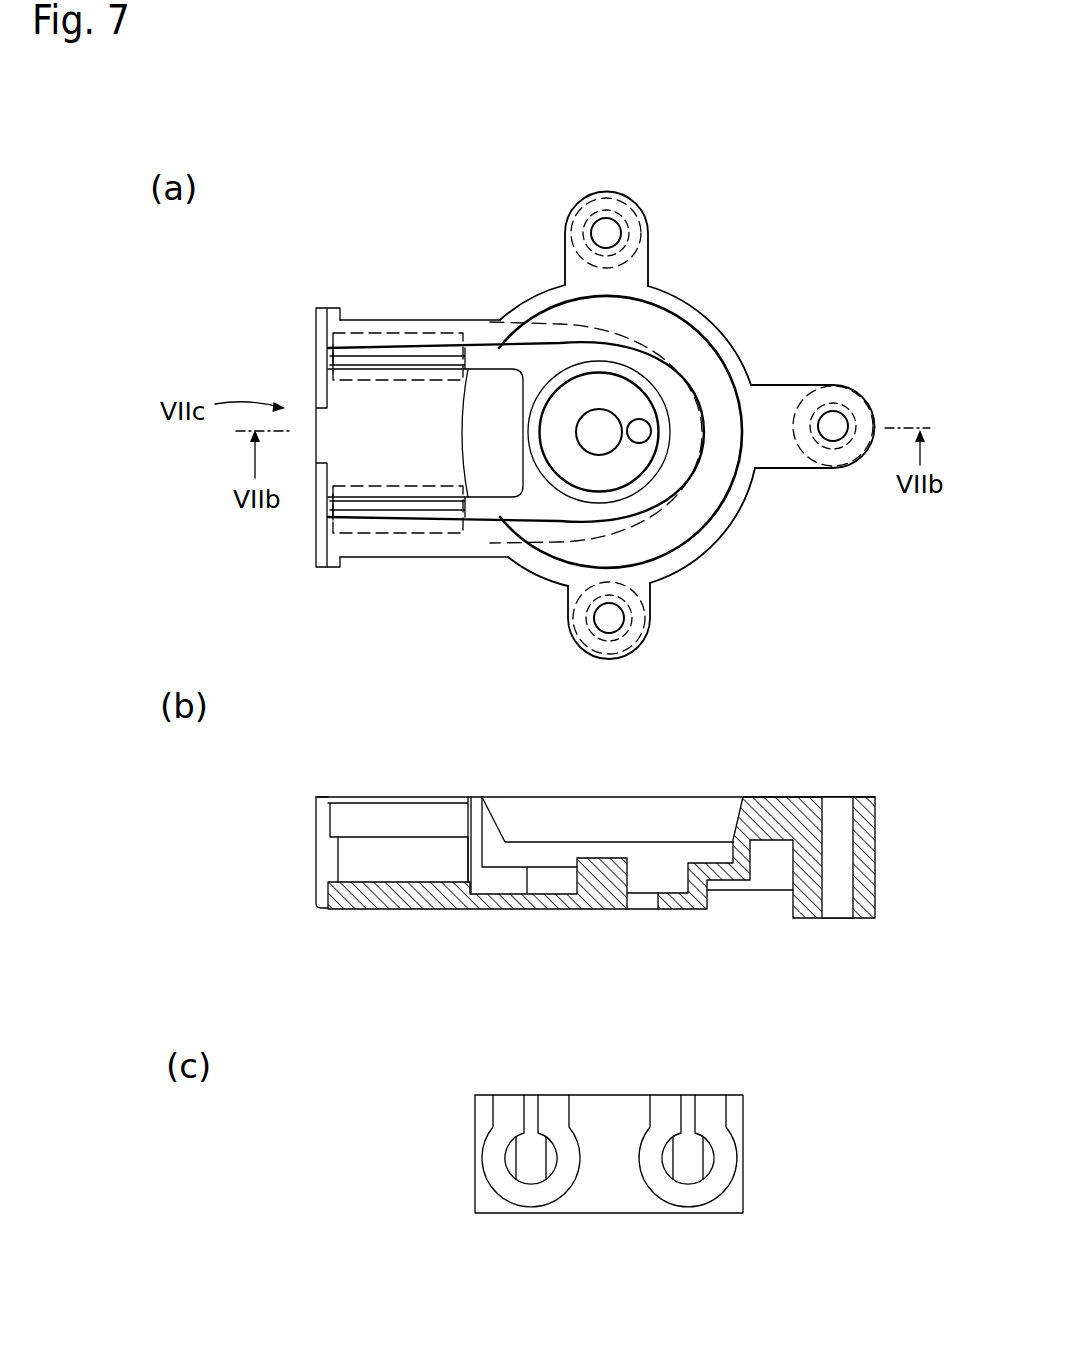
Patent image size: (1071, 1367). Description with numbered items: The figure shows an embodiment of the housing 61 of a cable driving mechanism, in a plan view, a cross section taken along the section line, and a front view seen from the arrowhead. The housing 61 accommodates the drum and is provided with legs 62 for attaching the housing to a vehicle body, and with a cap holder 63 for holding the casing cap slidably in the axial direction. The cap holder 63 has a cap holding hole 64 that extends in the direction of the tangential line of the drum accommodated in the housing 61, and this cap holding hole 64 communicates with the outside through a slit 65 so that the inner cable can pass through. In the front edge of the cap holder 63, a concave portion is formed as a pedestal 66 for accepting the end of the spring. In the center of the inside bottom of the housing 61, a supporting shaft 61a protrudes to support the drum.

The housing 61 is at (704, 294).
The supporting shaft 61a is at (606, 887).
The legs 62 is at (641, 217).
The cap holder 63 is at (433, 320).
The cap holding hole 64 is at (360, 350).
The slit 65 is at (345, 356).
The pedestal 66 is at (316, 538).